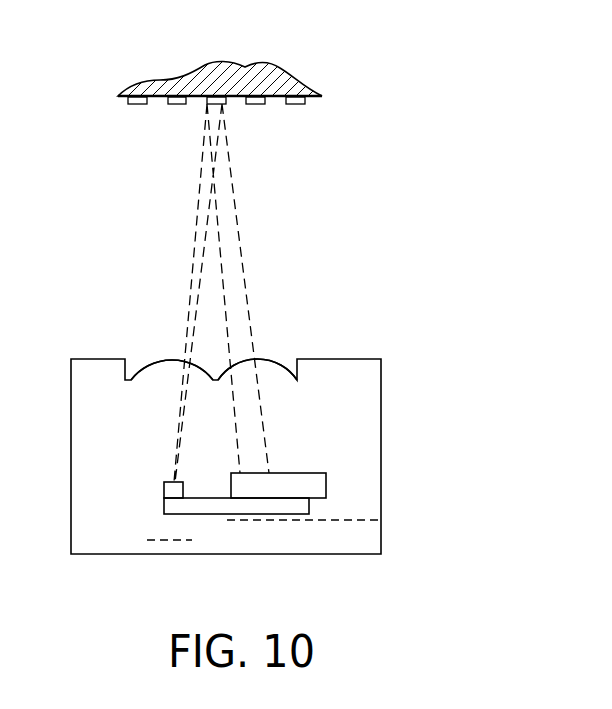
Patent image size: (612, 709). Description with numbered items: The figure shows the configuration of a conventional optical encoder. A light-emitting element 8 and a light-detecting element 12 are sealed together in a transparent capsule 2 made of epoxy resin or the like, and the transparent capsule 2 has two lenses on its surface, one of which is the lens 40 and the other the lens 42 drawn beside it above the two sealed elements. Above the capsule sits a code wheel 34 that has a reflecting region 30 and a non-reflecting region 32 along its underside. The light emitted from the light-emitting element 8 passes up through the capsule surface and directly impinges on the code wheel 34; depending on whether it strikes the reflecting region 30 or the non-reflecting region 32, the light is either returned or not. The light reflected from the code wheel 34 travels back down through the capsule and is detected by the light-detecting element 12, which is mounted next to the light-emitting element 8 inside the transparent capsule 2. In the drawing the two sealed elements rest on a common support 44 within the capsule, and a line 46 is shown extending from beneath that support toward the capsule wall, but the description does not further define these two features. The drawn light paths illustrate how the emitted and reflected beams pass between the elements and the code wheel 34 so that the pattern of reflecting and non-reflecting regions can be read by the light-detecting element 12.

The transparent capsule 2 is at (382, 393).
The light-emitting element 8 is at (164, 491).
The light-detecting element 12 is at (326, 487).
The reflecting region 30 is at (298, 106).
The non-reflecting region 32 is at (273, 101).
The code wheel 34 is at (288, 78).
The lens 40 is at (152, 360).
The lens 42 is at (272, 360).
The circuit board 44 is at (161, 541).
The signal line 46 is at (277, 521).